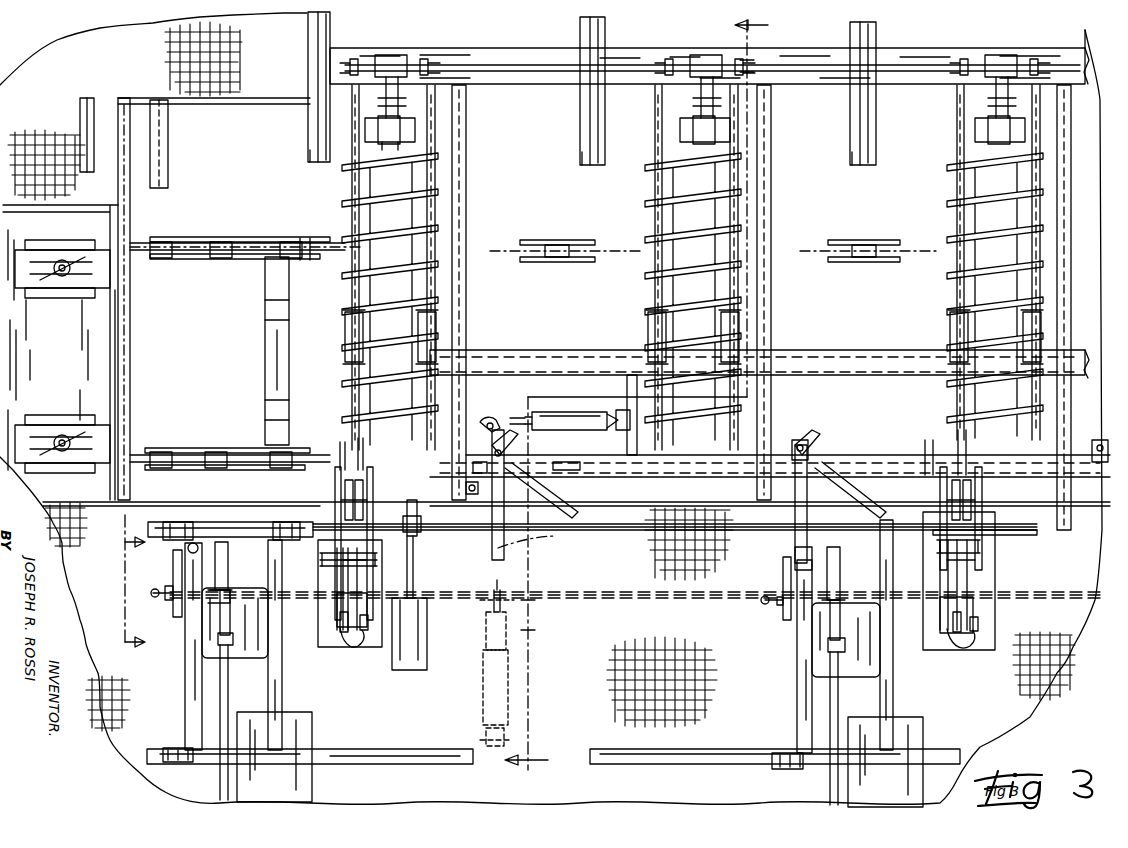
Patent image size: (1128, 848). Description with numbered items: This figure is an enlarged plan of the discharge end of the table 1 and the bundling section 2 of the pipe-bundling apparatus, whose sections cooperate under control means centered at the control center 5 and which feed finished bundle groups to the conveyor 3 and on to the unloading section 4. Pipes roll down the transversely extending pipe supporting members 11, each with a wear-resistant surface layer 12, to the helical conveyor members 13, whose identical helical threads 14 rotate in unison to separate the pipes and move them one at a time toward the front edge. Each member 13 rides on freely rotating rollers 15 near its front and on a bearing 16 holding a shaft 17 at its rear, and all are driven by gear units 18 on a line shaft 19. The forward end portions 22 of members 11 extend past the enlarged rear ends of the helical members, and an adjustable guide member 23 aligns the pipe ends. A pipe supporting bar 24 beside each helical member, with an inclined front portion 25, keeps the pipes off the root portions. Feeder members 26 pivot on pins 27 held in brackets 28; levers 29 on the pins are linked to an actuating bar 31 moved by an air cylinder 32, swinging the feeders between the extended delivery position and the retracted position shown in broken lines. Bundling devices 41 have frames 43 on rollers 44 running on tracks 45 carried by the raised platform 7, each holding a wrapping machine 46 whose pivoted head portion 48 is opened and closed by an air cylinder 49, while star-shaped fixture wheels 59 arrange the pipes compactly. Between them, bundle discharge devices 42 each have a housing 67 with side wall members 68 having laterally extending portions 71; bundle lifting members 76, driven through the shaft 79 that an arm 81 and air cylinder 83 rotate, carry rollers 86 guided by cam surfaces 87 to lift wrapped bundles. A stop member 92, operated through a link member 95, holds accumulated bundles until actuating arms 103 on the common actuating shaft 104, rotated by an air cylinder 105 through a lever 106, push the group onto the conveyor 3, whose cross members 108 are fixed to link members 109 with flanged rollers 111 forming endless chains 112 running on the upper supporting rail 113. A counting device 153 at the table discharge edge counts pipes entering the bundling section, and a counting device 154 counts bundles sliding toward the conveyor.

The table 1 is at (296, 58).
The bundling section 2 is at (610, 632).
The conveyor 3 is at (238, 232).
The unloading section 4 is at (641, 398).
The control center 5 is at (123, 583).
The raised platform 7 is at (1023, 703).
The pipe supporting members 11 is at (590, 42).
The pipe supporting surface layer 12 is at (332, 33).
The helical conveyor members 13 is at (410, 222).
The helical thread 14 is at (360, 186).
The rollers 15 is at (350, 320).
The bearing 16 is at (416, 130).
The shaft 17 is at (404, 86).
The gear units 18 is at (392, 66).
The line shaft 19 is at (530, 72).
The forward end portions 22 is at (312, 140).
The guide member 23 is at (130, 340).
The pipe supporting bar 24 is at (466, 292).
The front portion 25 is at (452, 468).
The feeder members 26 is at (560, 498).
The pins 27 is at (510, 448).
The brackets 28 is at (918, 472).
The levers 29 is at (490, 428).
The actuating bar 31 is at (652, 476).
The air cylinder 32 is at (575, 428).
The bundling devices 41 is at (187, 679).
The bundle discharge devices 42 is at (374, 648).
The frame 43 is at (282, 660).
The rollers 44 is at (190, 522).
The tracks 45 is at (252, 530).
The automatic wrapping machine 46 is at (200, 645).
The pivoted portion 48 is at (228, 566).
The air cylinder 49 is at (234, 646).
The fixture wheel 59 is at (175, 564).
The housing 67 is at (330, 576).
The side wall members 68 is at (345, 590).
The laterally extending portion 71 is at (334, 486).
The bundle lifting members 76 is at (340, 604).
The shaft 79 is at (566, 592).
The arm 81 is at (496, 590).
The air cylinder 83 is at (512, 680).
The roller 86 is at (352, 646).
The cam surface 87 is at (342, 616).
The stop member 92 is at (340, 460).
The link member 95 is at (360, 490).
The actuating arm 103 is at (330, 548).
The actuating shaft 104 is at (602, 530).
The air cylinder 105 is at (416, 662).
The lever 106 is at (414, 532).
The cross members 108 is at (268, 348).
The link members 109 is at (196, 240).
The flanged rollers 111 is at (158, 238).
The endless conveyor chain 112 is at (176, 258).
The upper supporting rail 113 is at (300, 258).
The counting device 153 is at (466, 486).
The counting device 154 is at (332, 564).